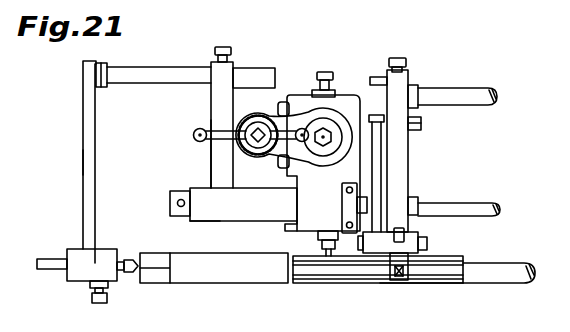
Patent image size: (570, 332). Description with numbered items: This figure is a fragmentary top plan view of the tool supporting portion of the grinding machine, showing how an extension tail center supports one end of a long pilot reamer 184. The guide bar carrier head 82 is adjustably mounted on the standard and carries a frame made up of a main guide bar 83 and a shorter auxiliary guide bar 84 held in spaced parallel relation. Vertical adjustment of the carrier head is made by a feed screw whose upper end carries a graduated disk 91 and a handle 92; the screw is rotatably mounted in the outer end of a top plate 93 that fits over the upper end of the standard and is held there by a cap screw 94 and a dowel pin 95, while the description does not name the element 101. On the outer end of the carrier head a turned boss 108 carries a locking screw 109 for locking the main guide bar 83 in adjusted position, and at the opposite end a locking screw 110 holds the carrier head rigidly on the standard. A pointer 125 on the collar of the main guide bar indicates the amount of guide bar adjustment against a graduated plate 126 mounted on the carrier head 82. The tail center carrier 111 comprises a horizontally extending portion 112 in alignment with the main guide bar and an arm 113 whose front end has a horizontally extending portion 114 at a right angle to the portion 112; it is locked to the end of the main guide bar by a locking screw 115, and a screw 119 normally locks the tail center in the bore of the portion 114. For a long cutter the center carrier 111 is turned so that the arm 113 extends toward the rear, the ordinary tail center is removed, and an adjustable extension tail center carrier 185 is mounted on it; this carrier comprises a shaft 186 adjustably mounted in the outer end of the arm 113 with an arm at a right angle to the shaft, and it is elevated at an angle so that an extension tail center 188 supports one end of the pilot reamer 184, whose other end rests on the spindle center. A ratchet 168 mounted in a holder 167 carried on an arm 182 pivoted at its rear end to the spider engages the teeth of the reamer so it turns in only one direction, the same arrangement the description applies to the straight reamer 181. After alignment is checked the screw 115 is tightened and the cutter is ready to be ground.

The guide bar carrier head 82 is at (308, 226).
The main guide bar 83 is at (452, 203).
The auxiliary guide bar 84 is at (475, 102).
The graduated disk 91 is at (253, 113).
The handle 92 is at (213, 128).
The top plate 93 is at (240, 161).
The cap screw 94 is at (323, 147).
The dowel pin 95 is at (306, 134).
The gear 101 is at (257, 157).
The turned boss 108 is at (340, 259).
The locking screw 109 is at (326, 250).
The locking screw 110 is at (336, 65).
The tail center carrier 111 is at (187, 224).
The horizontally extending portion 112 is at (257, 210).
The arm 113 is at (212, 150).
The horizontally extending portion 114 is at (75, 281).
The locking screw 115 is at (170, 197).
The screw 119 is at (102, 304).
The pointer 125 is at (373, 192).
The graduated plate 126 is at (347, 206).
The holder 167 is at (428, 237).
The ratchet 168 is at (422, 282).
The straight reamer 181 is at (82, 162).
The arm 182 is at (378, 143).
The pilot reamer 184 is at (414, 280).
The adjustable extension tail center carrier 185 is at (81, 134).
The shaft 186 is at (158, 72).
The extension tail center 188 is at (128, 274).